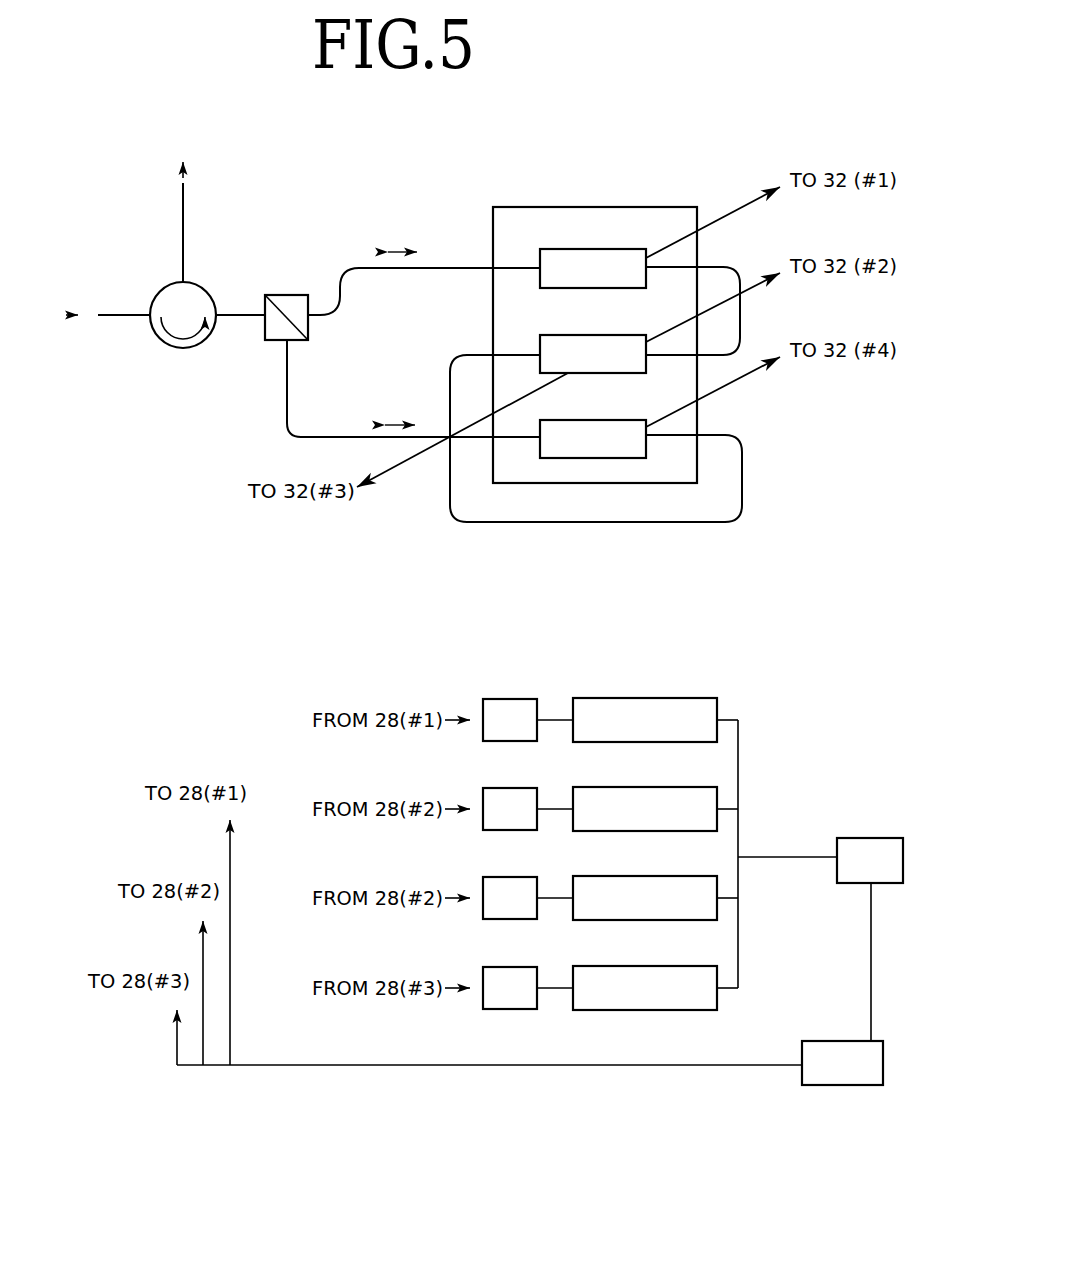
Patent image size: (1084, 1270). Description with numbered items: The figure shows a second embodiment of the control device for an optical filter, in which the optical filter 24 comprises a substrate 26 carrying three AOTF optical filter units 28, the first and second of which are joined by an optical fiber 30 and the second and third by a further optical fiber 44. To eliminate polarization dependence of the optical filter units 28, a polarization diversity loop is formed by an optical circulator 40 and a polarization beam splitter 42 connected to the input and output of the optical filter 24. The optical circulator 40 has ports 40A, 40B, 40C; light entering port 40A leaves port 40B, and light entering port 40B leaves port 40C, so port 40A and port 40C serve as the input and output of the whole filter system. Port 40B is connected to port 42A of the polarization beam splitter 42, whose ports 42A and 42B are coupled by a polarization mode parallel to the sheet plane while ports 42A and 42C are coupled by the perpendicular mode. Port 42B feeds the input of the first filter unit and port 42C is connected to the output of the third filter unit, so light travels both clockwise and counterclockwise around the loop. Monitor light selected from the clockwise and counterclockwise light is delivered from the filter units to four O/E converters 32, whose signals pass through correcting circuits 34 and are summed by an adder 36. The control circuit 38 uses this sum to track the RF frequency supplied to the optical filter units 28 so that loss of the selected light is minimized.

The optical filter 24 is at (518, 204).
The substrate 26 is at (636, 205).
The optical filter unit 28 is at (553, 249).
The optical fiber 30 is at (741, 313).
The O/E converter 32 is at (518, 686).
The correcting circuit 34 is at (653, 686).
The adder 36 is at (883, 838).
The control circuit 38 is at (845, 1085).
The optical circulator 40 is at (158, 293).
The port 40A is at (150, 318).
The port 40B is at (220, 320).
The port 40C is at (182, 278).
The polarization beam splitter 42 is at (283, 294).
The port 42A is at (264, 313).
The port 42B is at (310, 318).
The port 42C is at (291, 343).
The optical fiber 44 is at (743, 470).